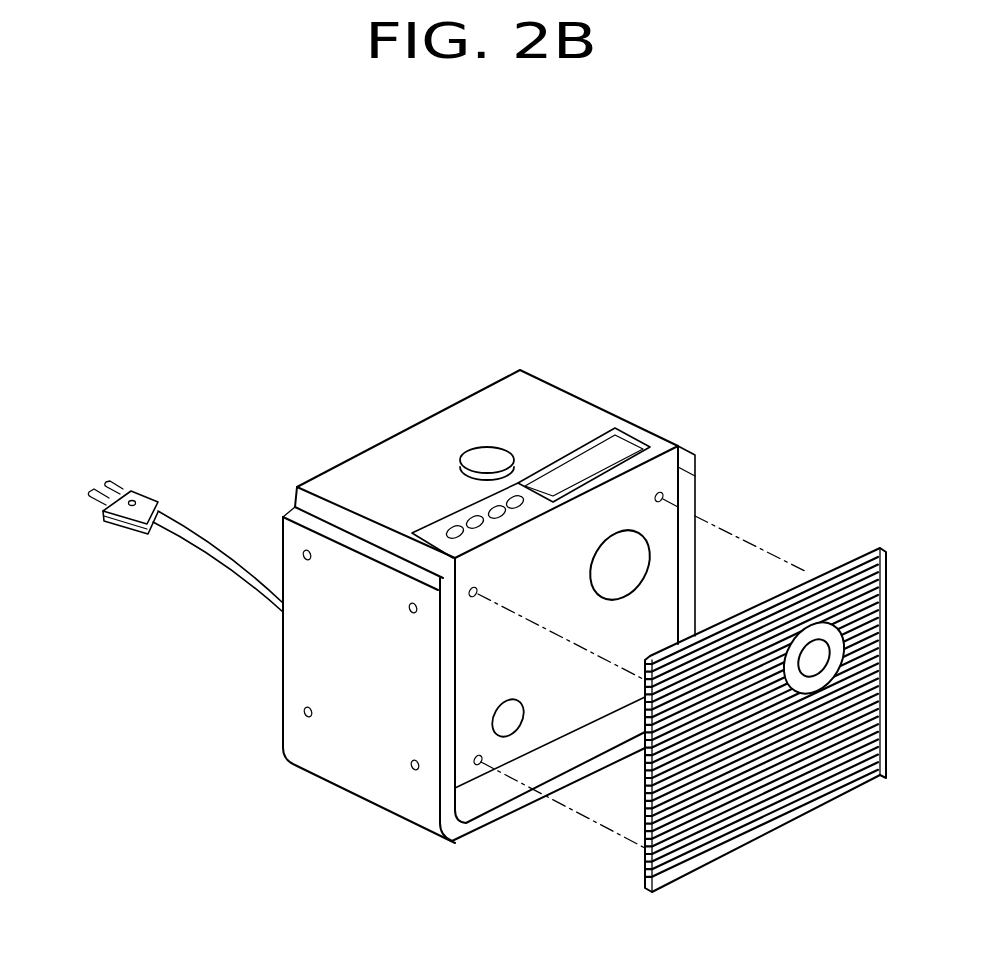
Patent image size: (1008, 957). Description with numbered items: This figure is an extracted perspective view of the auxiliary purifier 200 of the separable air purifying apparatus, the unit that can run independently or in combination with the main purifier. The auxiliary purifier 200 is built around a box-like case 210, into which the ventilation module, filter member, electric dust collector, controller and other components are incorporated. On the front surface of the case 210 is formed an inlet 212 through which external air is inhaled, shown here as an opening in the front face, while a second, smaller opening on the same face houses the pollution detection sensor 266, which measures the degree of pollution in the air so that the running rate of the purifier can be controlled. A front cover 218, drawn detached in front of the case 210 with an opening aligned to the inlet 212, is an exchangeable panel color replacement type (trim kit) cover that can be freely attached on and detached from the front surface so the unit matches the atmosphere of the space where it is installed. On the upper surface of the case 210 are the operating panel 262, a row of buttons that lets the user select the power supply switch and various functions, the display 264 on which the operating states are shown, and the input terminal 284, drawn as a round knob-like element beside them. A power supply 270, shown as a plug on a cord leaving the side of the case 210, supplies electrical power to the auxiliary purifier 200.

The auxiliary purifier 200 is at (465, 388).
The case 210 is at (583, 410).
The inlet 212 is at (628, 552).
The front cover 218 is at (792, 810).
The operating panel 262 is at (453, 533).
The display 264 is at (632, 446).
The pollution detection sensor 266 is at (507, 718).
The power supply 270 is at (132, 492).
The input terminal 284 is at (478, 458).